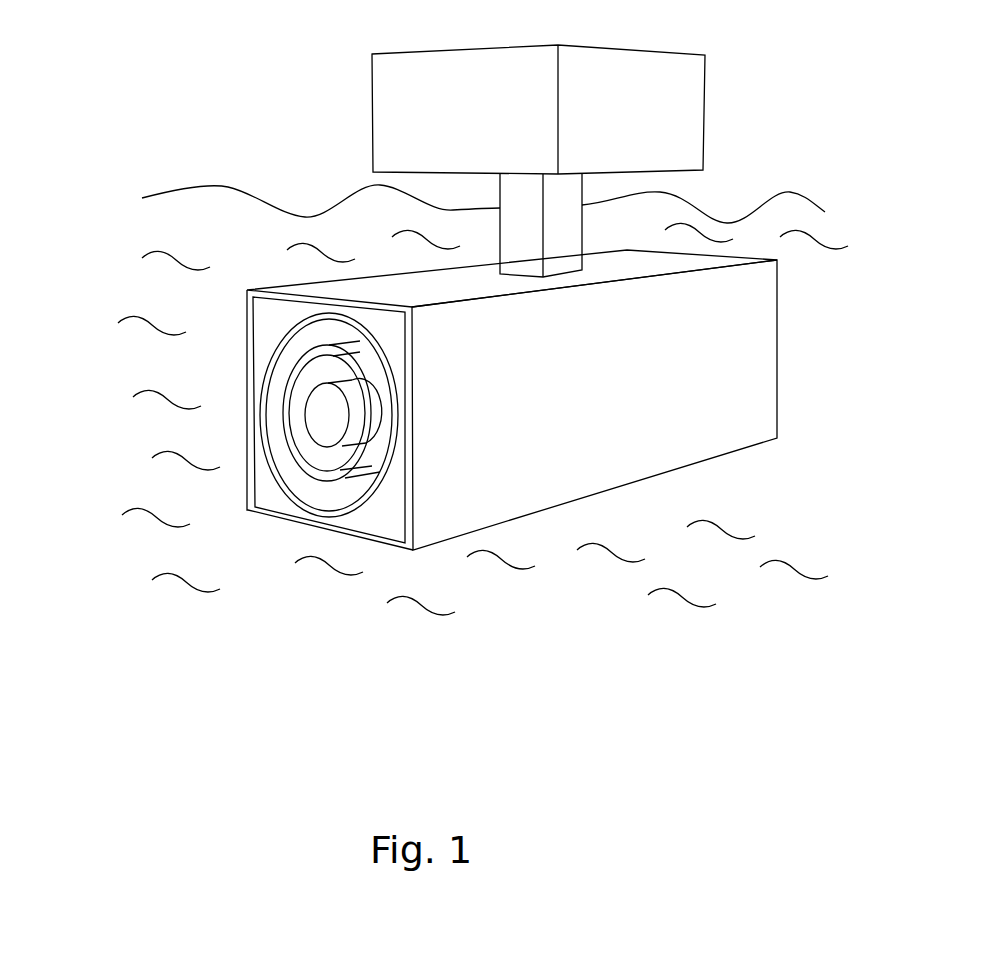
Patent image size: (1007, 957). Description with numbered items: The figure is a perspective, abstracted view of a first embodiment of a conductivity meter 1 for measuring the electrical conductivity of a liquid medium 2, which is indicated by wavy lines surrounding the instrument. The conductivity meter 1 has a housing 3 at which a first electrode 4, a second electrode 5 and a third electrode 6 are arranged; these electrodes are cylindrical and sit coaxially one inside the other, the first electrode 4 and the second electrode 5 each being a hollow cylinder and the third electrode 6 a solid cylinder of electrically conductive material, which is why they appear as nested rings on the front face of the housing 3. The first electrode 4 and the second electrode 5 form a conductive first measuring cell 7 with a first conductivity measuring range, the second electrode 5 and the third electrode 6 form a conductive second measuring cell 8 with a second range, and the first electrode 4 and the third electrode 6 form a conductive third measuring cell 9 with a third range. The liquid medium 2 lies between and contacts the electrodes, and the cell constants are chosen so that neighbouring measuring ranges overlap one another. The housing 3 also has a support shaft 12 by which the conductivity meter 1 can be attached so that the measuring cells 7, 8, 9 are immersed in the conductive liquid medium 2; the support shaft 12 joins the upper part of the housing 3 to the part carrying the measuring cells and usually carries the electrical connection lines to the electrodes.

The conductivity meter 1 is at (737, 135).
The liquid medium 2 is at (238, 256).
The housing 3 is at (515, 497).
The first electrode 4 is at (288, 483).
The second electrode 5 is at (308, 468).
The third electrode 6 is at (323, 420).
The first measuring cell 7 is at (289, 482).
The second measuring cell 8 is at (297, 432).
The third measuring cell 9 is at (283, 322).
The support shaft 12 is at (568, 233).